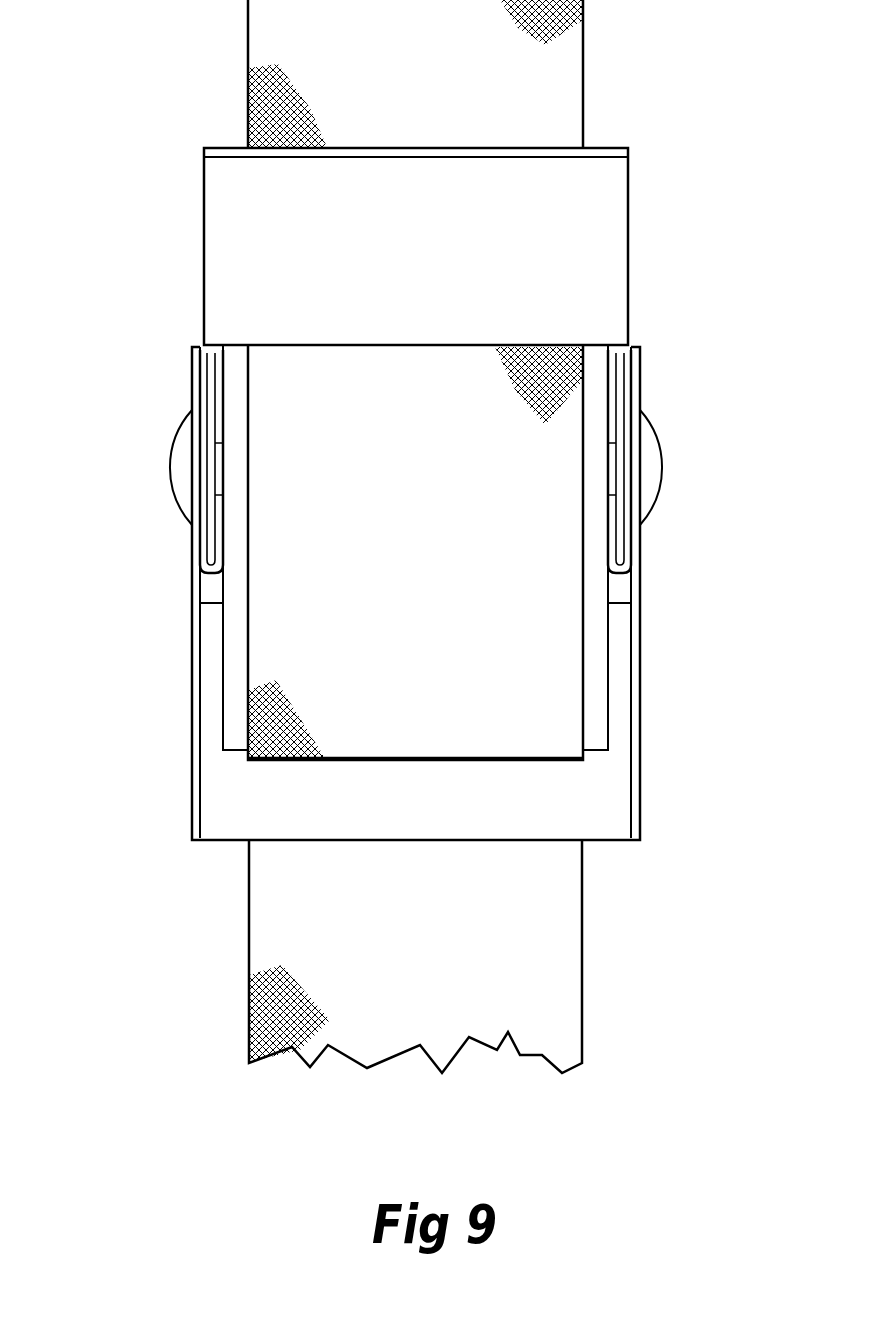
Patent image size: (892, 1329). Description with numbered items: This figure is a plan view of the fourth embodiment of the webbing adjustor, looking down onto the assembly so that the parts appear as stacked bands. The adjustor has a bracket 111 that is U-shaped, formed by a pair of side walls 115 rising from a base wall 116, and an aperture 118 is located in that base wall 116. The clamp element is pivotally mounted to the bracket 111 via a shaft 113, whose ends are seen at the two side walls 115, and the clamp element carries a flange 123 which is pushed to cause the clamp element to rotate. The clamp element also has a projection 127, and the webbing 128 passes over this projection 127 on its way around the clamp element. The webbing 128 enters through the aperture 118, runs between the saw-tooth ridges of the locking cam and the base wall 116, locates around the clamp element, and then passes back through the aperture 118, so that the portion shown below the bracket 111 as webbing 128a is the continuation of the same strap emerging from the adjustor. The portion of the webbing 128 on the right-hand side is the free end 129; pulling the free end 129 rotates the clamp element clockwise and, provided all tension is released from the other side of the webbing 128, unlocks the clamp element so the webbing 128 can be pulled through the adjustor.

The bracket 111 is at (730, 532).
The shaft 113 is at (200, 465).
The side walls 115 is at (637, 590).
The base wall 116 is at (595, 803).
The aperture 118 is at (208, 660).
The flange 123 is at (568, 278).
The projection 127 is at (237, 592).
The webbing 128 is at (523, 488).
The shaft lower portion 128a is at (528, 915).
The free end 129 is at (510, 88).